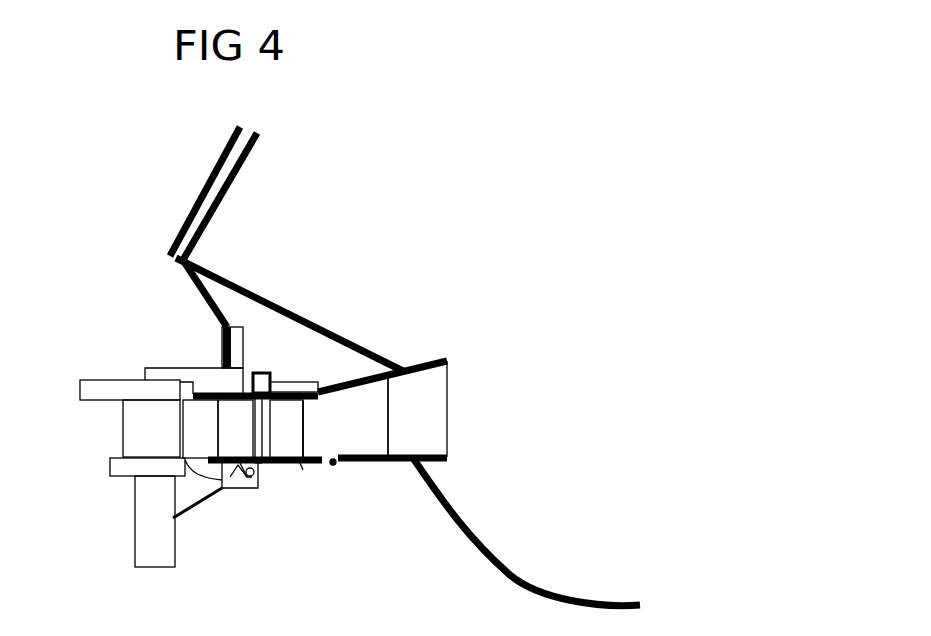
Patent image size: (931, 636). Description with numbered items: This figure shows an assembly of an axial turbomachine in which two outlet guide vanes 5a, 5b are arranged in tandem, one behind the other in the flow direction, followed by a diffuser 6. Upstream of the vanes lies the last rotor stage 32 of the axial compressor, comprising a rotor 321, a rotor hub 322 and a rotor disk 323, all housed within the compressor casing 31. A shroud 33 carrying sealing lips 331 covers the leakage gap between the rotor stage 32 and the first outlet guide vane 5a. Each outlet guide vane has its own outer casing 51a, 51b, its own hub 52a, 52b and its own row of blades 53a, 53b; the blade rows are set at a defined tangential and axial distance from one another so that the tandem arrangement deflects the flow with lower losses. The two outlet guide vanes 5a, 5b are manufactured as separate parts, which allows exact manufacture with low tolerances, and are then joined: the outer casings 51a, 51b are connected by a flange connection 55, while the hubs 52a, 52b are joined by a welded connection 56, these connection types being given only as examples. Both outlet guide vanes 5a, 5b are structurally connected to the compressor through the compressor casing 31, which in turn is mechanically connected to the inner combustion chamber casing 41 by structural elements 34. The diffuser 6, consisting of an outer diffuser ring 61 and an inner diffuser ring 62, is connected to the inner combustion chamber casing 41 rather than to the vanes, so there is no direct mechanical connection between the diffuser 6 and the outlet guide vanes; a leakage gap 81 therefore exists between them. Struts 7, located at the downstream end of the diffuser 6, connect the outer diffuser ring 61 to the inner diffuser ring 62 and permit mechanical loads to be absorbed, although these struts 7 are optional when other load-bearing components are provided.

The compressor casing 31 is at (122, 390).
The last rotor stage 32 is at (100, 480).
The rotor 321 is at (127, 433).
The rotor hub 322 is at (122, 474).
The rotor disk 323 is at (140, 537).
The shroud 33 is at (184, 494).
The sealing lips 331 is at (243, 490).
The structural elements 34 is at (177, 273).
The inner combustion chamber casing 41 is at (288, 310).
The outer casing of first outlet guide vane 51a is at (215, 392).
The outer casing of second outlet guide vane 51b is at (287, 388).
The hub of first outlet guide vane 52a is at (224, 481).
The hub of second outlet guide vane 52b is at (301, 463).
The blades of first outlet guide vane 53a is at (225, 450).
The blades of second outlet guide vane 53b is at (300, 420).
The first outlet guide vane 5a is at (235, 429).
The second outlet guide vane 5b is at (286, 429).
The flange connection 55 is at (263, 372).
The welded connection 56 is at (260, 463).
The diffuser 6 is at (345, 416).
The outer diffuser ring 61 is at (372, 377).
The inner diffuser ring 62 is at (389, 460).
The struts 7 is at (432, 408).
The leakage gap 81 is at (336, 466).